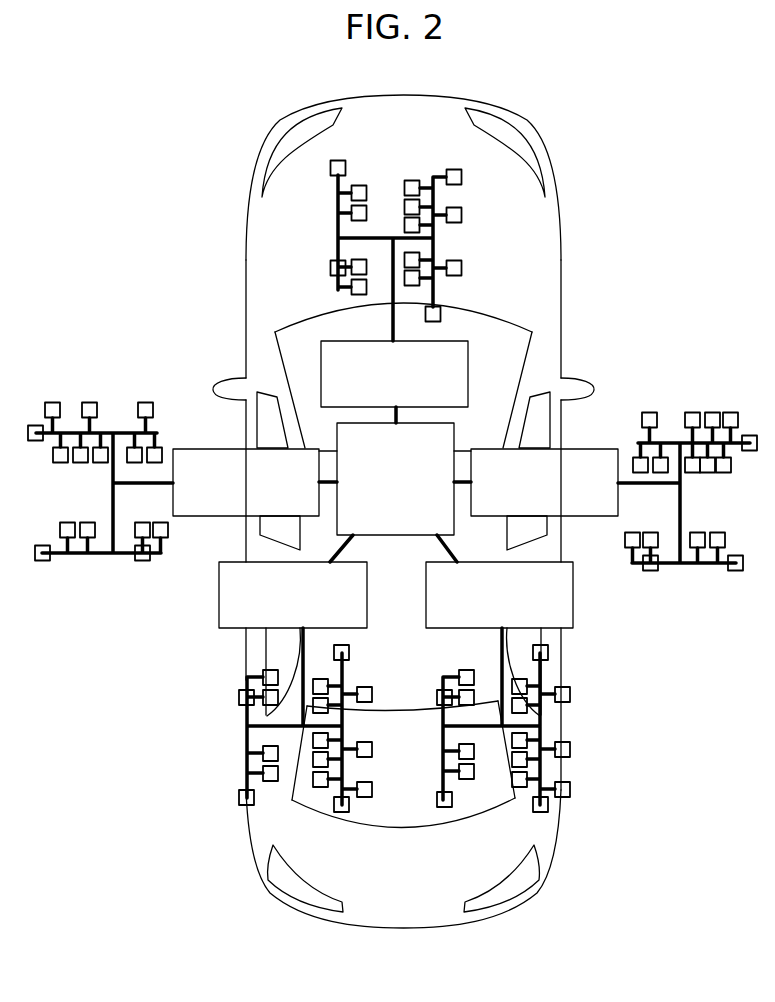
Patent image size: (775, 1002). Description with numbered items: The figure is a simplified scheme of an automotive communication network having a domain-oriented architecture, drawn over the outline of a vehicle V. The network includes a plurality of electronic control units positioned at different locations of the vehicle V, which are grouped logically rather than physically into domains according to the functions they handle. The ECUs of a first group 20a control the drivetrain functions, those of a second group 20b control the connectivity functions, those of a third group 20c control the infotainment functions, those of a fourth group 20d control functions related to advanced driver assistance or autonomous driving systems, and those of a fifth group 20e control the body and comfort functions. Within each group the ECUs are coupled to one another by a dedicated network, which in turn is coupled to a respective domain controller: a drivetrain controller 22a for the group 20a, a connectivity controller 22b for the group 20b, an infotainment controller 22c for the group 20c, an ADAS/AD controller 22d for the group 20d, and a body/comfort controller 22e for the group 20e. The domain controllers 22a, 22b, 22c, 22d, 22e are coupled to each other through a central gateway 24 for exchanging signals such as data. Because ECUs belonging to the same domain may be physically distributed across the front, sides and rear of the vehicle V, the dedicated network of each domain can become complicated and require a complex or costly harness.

The vehicle V is at (597, 156).
The first group 20a is at (108, 383).
The second group 20b is at (382, 182).
The third group 20c is at (710, 390).
The fourth group 20d is at (590, 737).
The fifth group 20e is at (230, 730).
The drivetrain controller 22a is at (218, 460).
The connectivity controller 22b is at (453, 377).
The infotainment controller 22c is at (590, 462).
The ADAS/AD controller 22d is at (565, 602).
The body/comfort controller 22e is at (230, 595).
The central gateway 24 is at (397, 517).